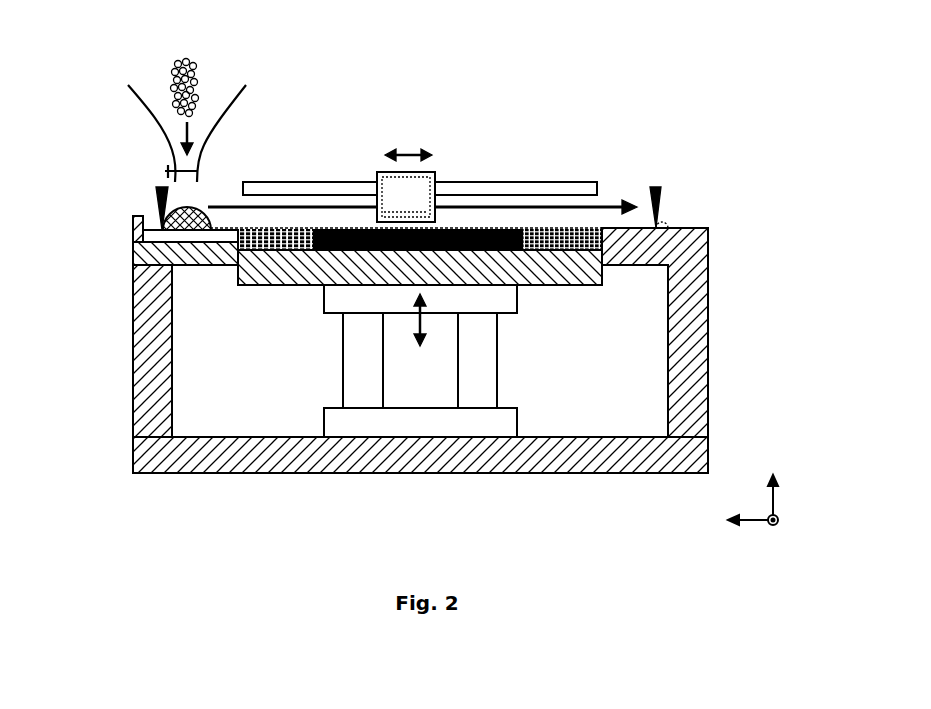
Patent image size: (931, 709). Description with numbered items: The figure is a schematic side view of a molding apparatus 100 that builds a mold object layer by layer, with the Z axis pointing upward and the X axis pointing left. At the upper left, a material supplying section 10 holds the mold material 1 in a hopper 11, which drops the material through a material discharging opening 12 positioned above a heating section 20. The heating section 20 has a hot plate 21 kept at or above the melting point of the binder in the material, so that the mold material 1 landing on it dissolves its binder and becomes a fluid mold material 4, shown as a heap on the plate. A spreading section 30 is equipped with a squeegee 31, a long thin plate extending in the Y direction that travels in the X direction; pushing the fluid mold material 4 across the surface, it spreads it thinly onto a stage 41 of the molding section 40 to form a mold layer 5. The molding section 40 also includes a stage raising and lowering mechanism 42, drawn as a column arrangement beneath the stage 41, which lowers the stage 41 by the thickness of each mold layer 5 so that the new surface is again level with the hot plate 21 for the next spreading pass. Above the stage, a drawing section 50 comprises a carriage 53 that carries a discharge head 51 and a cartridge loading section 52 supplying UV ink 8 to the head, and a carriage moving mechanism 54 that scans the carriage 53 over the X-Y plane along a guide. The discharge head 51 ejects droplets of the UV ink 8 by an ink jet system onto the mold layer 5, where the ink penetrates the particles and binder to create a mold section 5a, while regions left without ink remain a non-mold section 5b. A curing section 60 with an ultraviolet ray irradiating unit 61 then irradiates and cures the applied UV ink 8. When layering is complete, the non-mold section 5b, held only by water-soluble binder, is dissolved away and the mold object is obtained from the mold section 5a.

The molding apparatus 100 is at (552, 38).
The mold material 1 is at (176, 58).
The material supplying section 10 is at (134, 61).
The hopper 11 is at (138, 115).
The material discharging opening 12 is at (182, 180).
The heating section 20 is at (150, 256).
The hot plate 21 is at (191, 244).
The spreading section 30 is at (135, 195).
The squeegee 31 is at (157, 188).
The fluid mold material 4 is at (196, 208).
The molding section 40 is at (243, 349).
The stage 41 is at (281, 278).
The stage raising and lowering mechanism 42 is at (322, 338).
The mold layer 5 is at (455, 228).
The mold section 5a is at (486, 240).
The non-mold section 5b is at (560, 230).
The drawing section 50 is at (465, 72).
The discharge head 51 is at (402, 212).
The cartridge loading section 52 is at (417, 212).
The UV ink 8 is at (442, 151).
The carriage 53 is at (390, 172).
The carriage moving mechanism 54 is at (386, 116).
The curing section 60 is at (332, 160).
The ultraviolet ray irradiating unit 61 is at (312, 184).